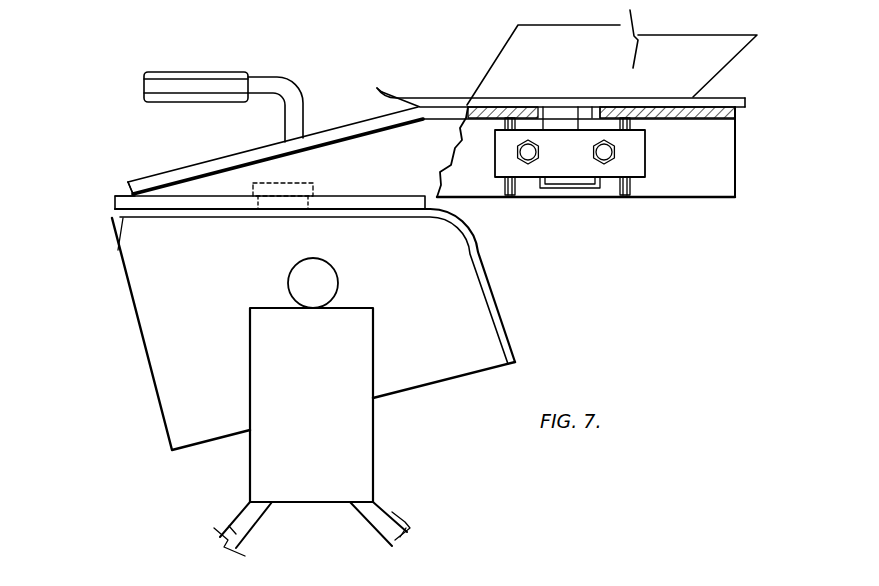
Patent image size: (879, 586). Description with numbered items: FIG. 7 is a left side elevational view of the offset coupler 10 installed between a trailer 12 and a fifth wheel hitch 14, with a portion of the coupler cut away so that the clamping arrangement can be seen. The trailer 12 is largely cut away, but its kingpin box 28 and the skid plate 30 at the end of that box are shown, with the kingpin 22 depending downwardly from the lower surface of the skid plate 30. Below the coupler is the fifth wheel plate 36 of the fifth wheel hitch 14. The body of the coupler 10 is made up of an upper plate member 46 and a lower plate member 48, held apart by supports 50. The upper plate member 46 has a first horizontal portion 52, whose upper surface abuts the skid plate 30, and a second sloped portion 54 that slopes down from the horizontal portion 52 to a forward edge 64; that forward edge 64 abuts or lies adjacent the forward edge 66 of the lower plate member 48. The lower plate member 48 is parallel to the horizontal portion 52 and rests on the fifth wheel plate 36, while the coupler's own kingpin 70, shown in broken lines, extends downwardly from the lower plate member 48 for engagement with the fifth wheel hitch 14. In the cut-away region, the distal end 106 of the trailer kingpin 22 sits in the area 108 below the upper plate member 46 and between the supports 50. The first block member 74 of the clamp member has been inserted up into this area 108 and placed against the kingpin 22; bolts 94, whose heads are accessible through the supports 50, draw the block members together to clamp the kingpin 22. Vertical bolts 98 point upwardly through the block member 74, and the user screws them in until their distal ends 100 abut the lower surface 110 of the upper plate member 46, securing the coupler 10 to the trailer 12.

The offset coupler 10 is at (730, 190).
The trailer 12 is at (512, 44).
The fifth wheel hitch 14 is at (250, 461).
The kingpin 22 is at (558, 104).
The kingpin box 28 is at (720, 58).
The skid plate 30 is at (378, 84).
The fifth wheel plate 36 is at (116, 236).
The upper plate member 46 is at (339, 127).
The lower plate member 48 is at (173, 212).
The supports 50 is at (688, 198).
The first horizontal portion 52 is at (738, 113).
The second sloped portion 54 is at (197, 158).
The forward edge 64 is at (128, 183).
The forward edge 66 is at (114, 197).
The kingpin 70 is at (312, 186).
The first block member 74 is at (626, 196).
The bolts 94 is at (532, 165).
The bolts 98 is at (507, 195).
The distal ends 100 is at (458, 138).
The distal end 106 is at (568, 189).
The area 108 is at (600, 153).
The lower surface 110 is at (720, 126).